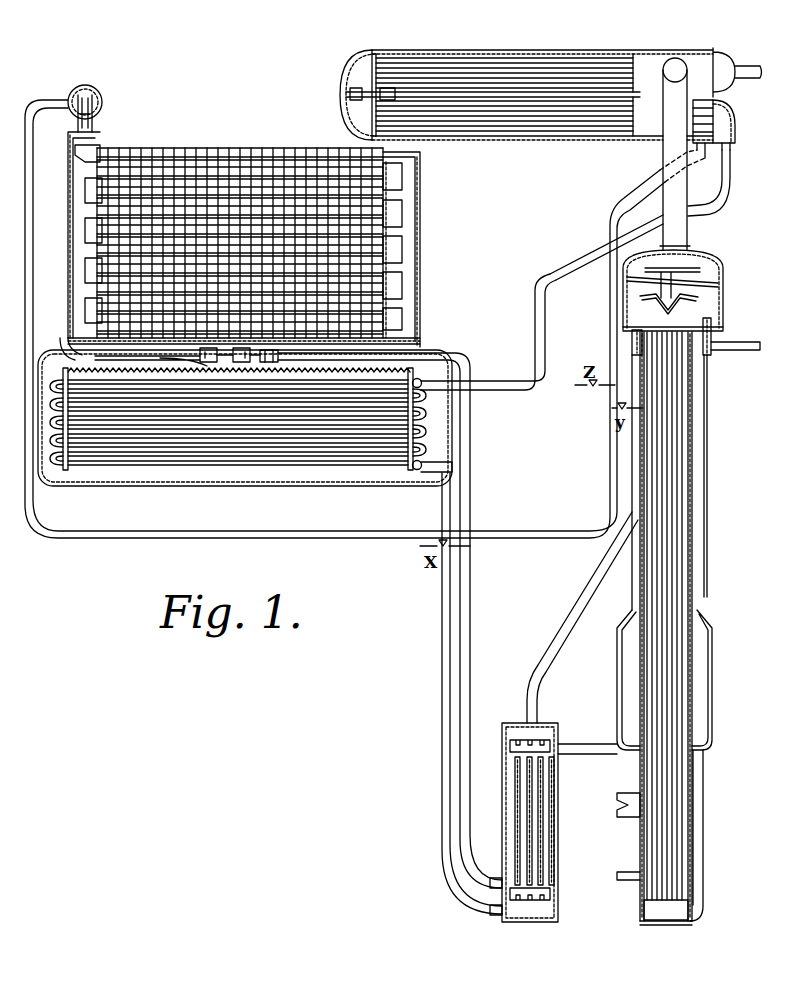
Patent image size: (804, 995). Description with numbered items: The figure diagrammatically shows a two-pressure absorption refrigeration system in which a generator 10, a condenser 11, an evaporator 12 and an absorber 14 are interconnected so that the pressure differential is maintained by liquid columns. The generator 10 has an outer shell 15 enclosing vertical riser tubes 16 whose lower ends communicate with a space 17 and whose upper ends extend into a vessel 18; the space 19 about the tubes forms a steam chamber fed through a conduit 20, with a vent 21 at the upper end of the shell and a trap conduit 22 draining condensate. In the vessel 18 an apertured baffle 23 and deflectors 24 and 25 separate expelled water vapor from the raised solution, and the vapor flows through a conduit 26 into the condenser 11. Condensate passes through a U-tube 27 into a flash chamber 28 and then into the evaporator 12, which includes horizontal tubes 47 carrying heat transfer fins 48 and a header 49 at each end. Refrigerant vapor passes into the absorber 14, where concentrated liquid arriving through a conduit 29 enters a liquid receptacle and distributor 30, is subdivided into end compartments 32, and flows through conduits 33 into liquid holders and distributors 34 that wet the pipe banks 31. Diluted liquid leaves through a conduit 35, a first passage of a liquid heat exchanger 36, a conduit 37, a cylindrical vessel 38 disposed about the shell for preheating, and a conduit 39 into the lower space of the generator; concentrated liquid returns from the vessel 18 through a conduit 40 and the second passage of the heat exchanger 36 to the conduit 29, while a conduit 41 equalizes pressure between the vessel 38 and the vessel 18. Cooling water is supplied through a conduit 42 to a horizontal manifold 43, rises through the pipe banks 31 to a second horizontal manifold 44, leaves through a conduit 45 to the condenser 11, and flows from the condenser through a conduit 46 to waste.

The generator 10 is at (633, 580).
The condenser 11 is at (559, 42).
The evaporator 12 is at (247, 141).
The absorber 14 is at (225, 490).
The outer shell 15 is at (637, 597).
The riser tubes 16 is at (676, 424).
The space 17 is at (660, 915).
The vessel 18 is at (724, 284).
The space 19 is at (670, 468).
The conduit 20 is at (625, 816).
The vent 21 is at (745, 342).
The trap conduit 22 is at (622, 881).
The apertured baffle 23 is at (706, 280).
The deflector 24 is at (682, 268).
The deflector 25 is at (690, 303).
The conduit 26 is at (660, 163).
The U-tube 27 is at (38, 306).
The flash chamber 28 is at (101, 96).
The conduit 29 is at (540, 366).
The liquid receptacle and distributor 30 is at (260, 354).
The pipe banks 31 is at (412, 430).
The end compartments 32 is at (200, 352).
The conduits 33 is at (151, 354).
The liquid holders and distributors 34 is at (66, 344).
The conduit 35 is at (442, 655).
The liquid heat exchanger 36 is at (502, 800).
The conduit 37 is at (584, 744).
The vessel 38 is at (617, 686).
The conduit 39 is at (703, 815).
The conduit 40 is at (556, 638).
The conduit 41 is at (710, 545).
The conduit 42 is at (433, 474).
The horizontal manifold 43 is at (413, 470).
The second horizontal manifold 44 is at (420, 389).
The conduit 45 is at (556, 280).
The conduit 46 is at (742, 68).
The horizontal tubes 47 is at (302, 158).
The heat transfer fins 48 is at (152, 148).
The header 49 is at (70, 250).